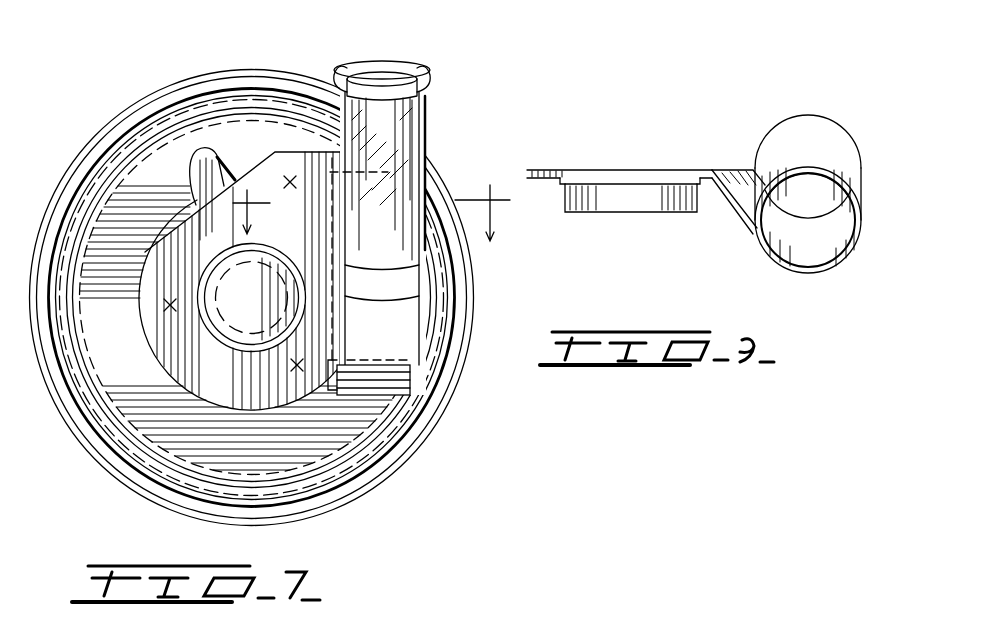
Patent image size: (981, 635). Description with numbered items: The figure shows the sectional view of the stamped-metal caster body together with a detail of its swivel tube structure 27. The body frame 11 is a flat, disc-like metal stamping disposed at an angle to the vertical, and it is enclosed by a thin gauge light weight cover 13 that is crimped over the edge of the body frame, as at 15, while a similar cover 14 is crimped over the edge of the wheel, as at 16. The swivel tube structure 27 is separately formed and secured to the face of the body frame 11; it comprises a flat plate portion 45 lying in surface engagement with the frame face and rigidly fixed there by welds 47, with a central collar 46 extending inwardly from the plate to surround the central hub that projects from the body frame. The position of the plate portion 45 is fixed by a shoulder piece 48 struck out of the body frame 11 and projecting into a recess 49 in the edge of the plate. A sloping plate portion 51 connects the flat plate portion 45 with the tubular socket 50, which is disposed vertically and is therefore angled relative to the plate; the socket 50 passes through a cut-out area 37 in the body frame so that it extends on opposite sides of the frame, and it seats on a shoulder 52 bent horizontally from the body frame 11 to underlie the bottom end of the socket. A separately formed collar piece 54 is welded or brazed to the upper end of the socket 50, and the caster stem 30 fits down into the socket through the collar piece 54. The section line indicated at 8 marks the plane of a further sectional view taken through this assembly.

In FIG. 7, the section line 8- 8 is at (371, 208).
In FIG. 7, the body frame 11 is at (117, 192).
In FIG. 7, the enclosing cover 13 is at (350, 460).
In FIG. 7, the enclosing cover 14 is at (470, 333).
In FIG. 7, the crimp 15 is at (83, 448).
In FIG. 7, the crimp 16 is at (452, 365).
In FIG. 7, the swivel tube structure 27 is at (317, 130).
In FIG. 7, the caster stem 30 is at (372, 85).
In FIG. 7, the cut-out area 37 is at (421, 140).
In FIG. 7, the flat plate portion 45 is at (183, 352).
In FIG. 9, the flat plate portion 45 is at (620, 172).
In FIG. 7, the central collar 46 is at (272, 245).
In FIG. 9, the central collar 46 is at (677, 200).
In FIG. 7, the welds 47 is at (290, 182).
In FIG. 7, the shoulder piece 48 is at (153, 250).
In FIG. 7, the recess 49 is at (217, 160).
In FIG. 7, the tubular socket 50 is at (383, 213).
In FIG. 9, the tubular socket 50 is at (845, 190).
In FIG. 9, the sloping plate portion 51 is at (733, 200).
In FIG. 7, the shoulder 52 is at (385, 385).
In FIG. 7, the collar piece 54 is at (430, 84).